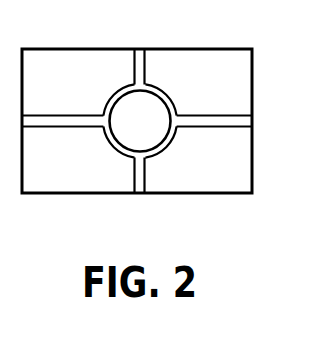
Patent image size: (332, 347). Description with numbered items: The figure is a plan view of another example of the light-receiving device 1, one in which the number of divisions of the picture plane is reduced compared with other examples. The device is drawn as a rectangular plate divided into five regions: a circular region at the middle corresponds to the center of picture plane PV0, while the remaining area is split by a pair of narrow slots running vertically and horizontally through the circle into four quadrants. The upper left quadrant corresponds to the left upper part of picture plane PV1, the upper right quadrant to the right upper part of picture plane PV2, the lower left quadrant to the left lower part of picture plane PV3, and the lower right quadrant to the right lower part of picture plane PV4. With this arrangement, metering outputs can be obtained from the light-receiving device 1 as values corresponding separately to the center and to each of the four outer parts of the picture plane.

The light-receiving device 1 is at (253, 102).
The left upper part of picture plane PV1 is at (90, 56).
The right upper part of picture plane PV2 is at (189, 60).
The left lower part of picture plane PV3 is at (63, 183).
The right lower part of picture plane PV4 is at (193, 187).
The center of picture plane PV0 is at (154, 133).